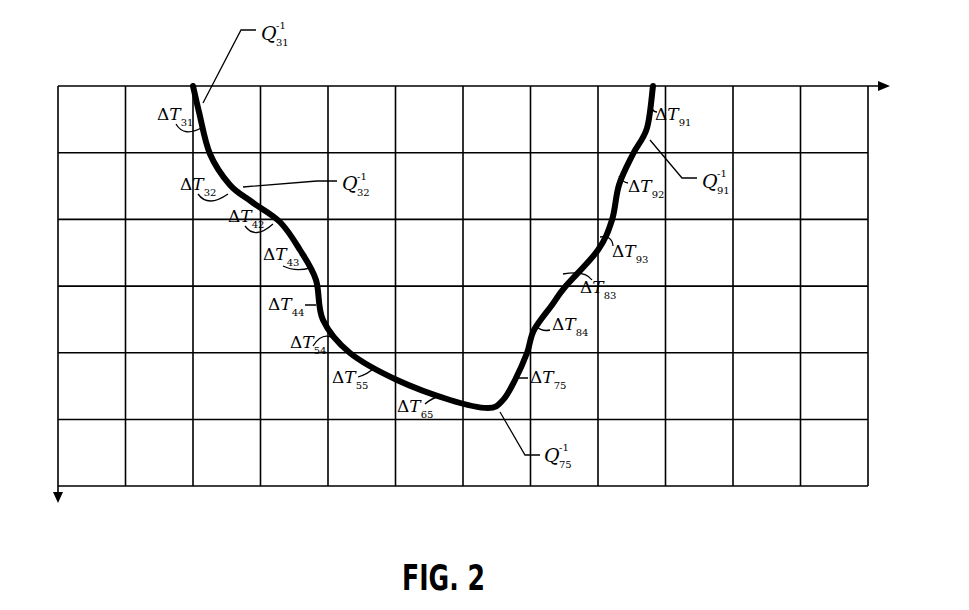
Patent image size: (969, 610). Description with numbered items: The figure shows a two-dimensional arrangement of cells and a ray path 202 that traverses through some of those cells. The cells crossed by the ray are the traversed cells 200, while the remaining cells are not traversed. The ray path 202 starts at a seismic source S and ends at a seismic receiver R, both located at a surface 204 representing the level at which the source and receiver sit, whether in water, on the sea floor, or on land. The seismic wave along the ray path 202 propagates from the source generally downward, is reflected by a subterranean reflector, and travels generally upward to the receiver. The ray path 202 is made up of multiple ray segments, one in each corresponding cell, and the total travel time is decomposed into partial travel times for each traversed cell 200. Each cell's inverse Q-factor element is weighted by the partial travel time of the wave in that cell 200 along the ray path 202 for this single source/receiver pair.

The cells traversed by the ray path 200 is at (287, 175).
The ray path 202 is at (313, 270).
The surface 204 is at (763, 86).